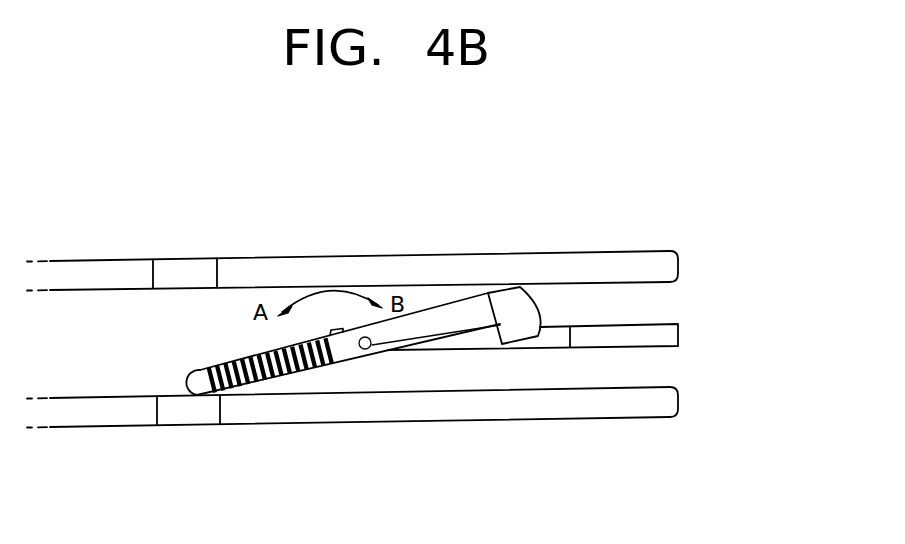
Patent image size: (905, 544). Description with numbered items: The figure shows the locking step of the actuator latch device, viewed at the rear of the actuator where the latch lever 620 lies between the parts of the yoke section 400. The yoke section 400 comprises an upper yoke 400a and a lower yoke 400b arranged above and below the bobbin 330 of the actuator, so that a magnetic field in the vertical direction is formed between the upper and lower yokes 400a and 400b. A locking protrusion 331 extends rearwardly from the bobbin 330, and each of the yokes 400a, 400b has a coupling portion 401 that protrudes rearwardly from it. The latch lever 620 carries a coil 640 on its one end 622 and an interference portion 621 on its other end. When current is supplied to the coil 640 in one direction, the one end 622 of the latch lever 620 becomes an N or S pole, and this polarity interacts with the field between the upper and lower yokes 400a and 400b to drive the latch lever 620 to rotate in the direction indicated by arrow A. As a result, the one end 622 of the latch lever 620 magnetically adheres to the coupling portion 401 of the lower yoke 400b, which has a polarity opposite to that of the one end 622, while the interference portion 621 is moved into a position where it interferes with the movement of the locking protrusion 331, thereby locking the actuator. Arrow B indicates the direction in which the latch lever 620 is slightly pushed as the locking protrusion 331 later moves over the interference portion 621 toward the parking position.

The yoke section 400 is at (790, 267).
The upper yoke 400a is at (678, 268).
The lower yoke 400b is at (678, 403).
The bobbin portion 330 is at (678, 337).
The locking protrusion 331 is at (566, 335).
The coupling portion 401 is at (186, 268).
The latch lever 620 is at (428, 323).
The interference portion 621 is at (520, 290).
The one end of latch lever 622 is at (197, 386).
The coil 640 is at (276, 383).